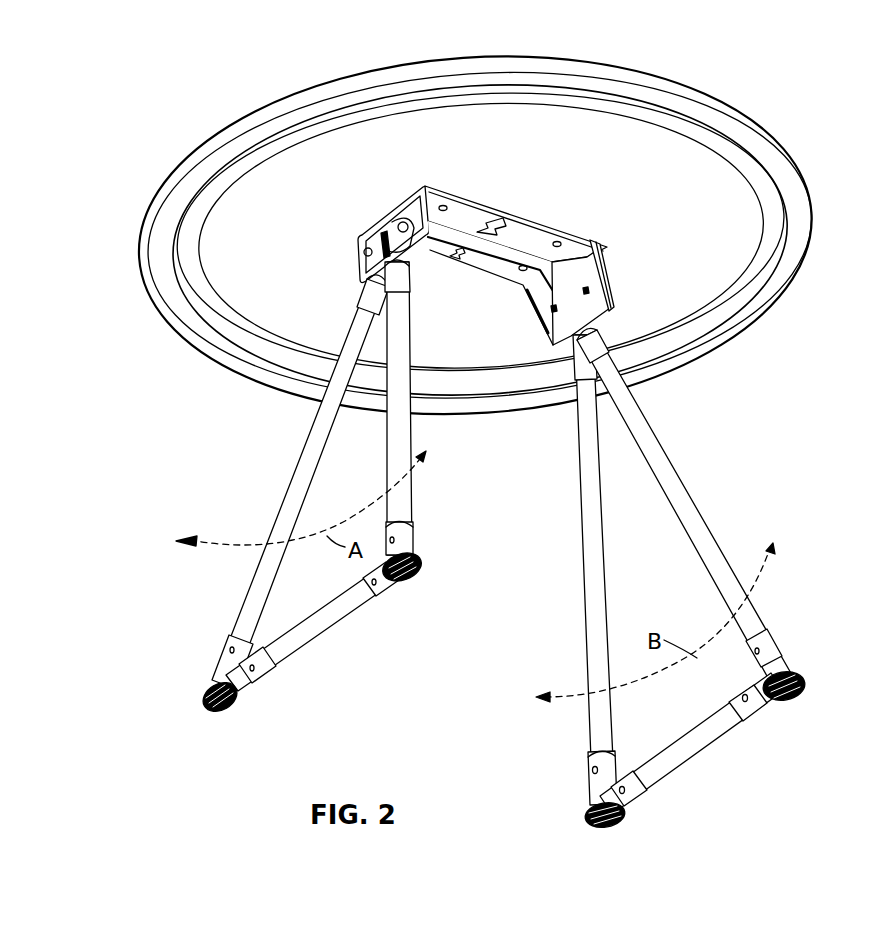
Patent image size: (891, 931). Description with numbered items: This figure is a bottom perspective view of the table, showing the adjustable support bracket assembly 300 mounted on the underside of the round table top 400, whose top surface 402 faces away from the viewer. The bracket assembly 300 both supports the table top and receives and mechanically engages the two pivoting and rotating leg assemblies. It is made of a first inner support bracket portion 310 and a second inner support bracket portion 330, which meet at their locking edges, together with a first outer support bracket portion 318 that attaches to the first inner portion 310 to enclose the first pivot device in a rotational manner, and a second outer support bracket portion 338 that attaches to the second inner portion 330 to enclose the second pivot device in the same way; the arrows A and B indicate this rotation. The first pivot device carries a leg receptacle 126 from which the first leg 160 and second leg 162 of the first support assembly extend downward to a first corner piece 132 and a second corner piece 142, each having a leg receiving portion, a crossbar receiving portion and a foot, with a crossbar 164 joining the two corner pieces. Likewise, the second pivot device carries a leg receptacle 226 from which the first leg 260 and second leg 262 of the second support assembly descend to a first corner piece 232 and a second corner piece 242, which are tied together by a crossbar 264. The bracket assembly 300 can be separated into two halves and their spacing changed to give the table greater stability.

The round table top 400 is at (475, 222).
The top surface 402 is at (225, 127).
The adjustable support bracket assembly 300 is at (445, 227).
The first inner support bracket portion 310 is at (461, 242).
The second inner support bracket portion 330 is at (567, 335).
The first outer support bracket portion 318 is at (358, 255).
The second outer support bracket portion 338 is at (612, 265).
The leg receptacle 126 is at (363, 297).
The leg receptacle 226 is at (611, 337).
The first leg 160 is at (274, 534).
The second leg 162 is at (409, 489).
The crossbar 164 is at (323, 633).
The first corner piece 132 is at (209, 712).
The second corner piece 142 is at (416, 586).
The first leg 260 is at (697, 508).
The second leg 262 is at (585, 657).
The crossbar 264 is at (716, 746).
The first corner piece 232 is at (807, 688).
The second corner piece 242 is at (582, 809).